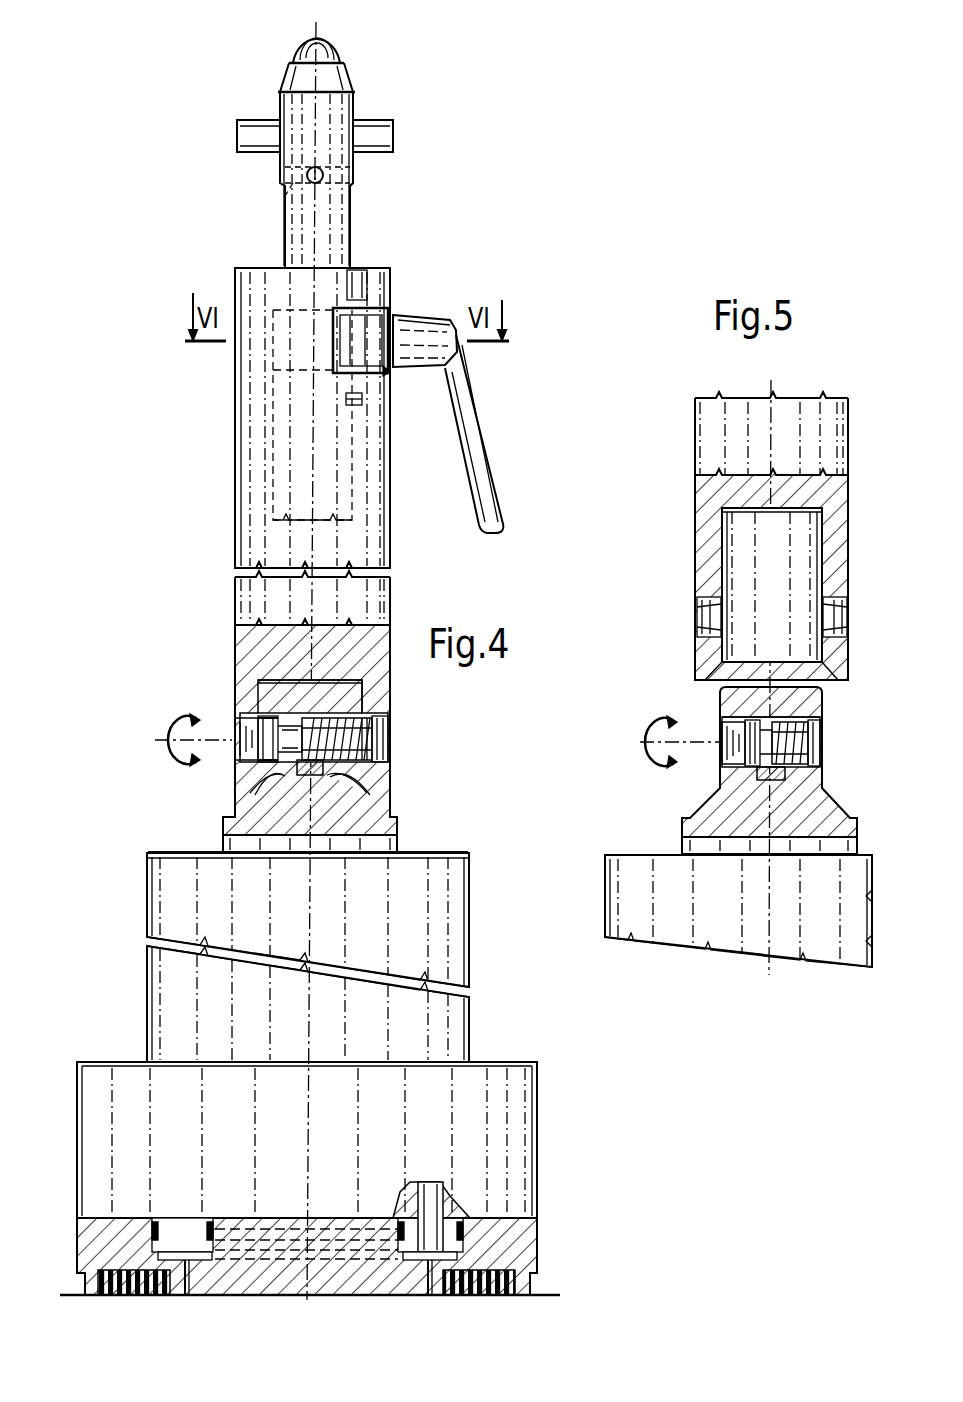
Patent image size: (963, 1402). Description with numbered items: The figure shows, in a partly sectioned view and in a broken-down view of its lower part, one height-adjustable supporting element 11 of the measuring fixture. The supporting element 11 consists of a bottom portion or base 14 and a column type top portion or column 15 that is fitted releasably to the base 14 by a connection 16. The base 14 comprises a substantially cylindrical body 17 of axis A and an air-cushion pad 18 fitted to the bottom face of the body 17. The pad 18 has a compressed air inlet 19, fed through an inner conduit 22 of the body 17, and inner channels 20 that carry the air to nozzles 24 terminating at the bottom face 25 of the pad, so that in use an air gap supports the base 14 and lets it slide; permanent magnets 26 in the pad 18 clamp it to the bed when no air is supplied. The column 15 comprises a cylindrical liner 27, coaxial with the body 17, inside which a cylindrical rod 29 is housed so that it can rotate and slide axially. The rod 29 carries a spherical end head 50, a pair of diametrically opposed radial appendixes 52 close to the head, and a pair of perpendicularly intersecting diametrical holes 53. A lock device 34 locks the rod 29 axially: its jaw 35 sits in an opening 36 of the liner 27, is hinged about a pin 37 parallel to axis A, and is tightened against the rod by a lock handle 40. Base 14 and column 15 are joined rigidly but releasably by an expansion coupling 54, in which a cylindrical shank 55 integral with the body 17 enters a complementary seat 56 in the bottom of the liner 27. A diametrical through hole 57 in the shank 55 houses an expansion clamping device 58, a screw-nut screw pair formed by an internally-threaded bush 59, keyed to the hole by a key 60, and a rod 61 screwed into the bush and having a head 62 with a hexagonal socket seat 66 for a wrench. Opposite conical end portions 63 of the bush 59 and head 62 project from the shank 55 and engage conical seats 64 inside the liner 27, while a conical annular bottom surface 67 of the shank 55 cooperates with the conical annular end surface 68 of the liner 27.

In FIG. 4, the supporting element 11 is at (421, 240).
In FIG. 4, the bottom portion (base) 14 is at (147, 993).
In FIG. 5, the bottom portion (base) 14 is at (828, 899).
In FIG. 4, the column type top portion (column) 15 is at (236, 550).
In FIG. 4, the connection 16 is at (222, 680).
In FIG. 4, the cylindrical body 17 is at (488, 1157).
In FIG. 4, the air-cushion pad 18 is at (515, 1253).
In FIG. 4, the compressed air inlet 19 is at (435, 1238).
In FIG. 4, the inner channels 20 is at (283, 1270).
In FIG. 4, the inner conduit 22 is at (433, 1205).
In FIG. 4, the nozzles 24 is at (190, 1282).
In FIG. 4, the bottom face 25 is at (328, 1294).
In FIG. 4, the permanent magnets 26 is at (152, 1290).
In FIG. 4, the cylindrical liner 27 is at (382, 512).
In FIG. 5, the cylindrical liner 27 is at (823, 452).
In FIG. 4, the cylindrical rod 29 is at (292, 243).
In FIG. 4, the lock device 34 is at (430, 318).
In FIG. 4, the jaw 35 is at (386, 372).
In FIG. 4, the opening 36 is at (392, 325).
In FIG. 4, the pin 37 is at (358, 280).
In FIG. 4, the lock handle 40 is at (472, 470).
In FIG. 4, the spherical end head 50 is at (338, 54).
In FIG. 4, the radial appendixes 52 is at (252, 128).
In FIG. 4, the diametrical holes 53 is at (292, 184).
In FIG. 4, the expansion coupling 54 is at (365, 773).
In FIG. 4, the cylindrical shank 55 is at (332, 695).
In FIG. 5, the cylindrical shank 55 is at (728, 702).
In FIG. 4, the seat 56 is at (272, 788).
In FIG. 5, the seat 56 is at (808, 548).
In FIG. 4, the diametrical through hole 57 is at (312, 731).
In FIG. 4, the expansion clamping device 58 is at (383, 793).
In FIG. 5, the expansion clamping device 58 is at (820, 746).
In FIG. 4, the internally-threaded bush 59 is at (375, 755).
In FIG. 5, the internally-threaded bush 59 is at (792, 721).
In FIG. 4, the key 60 is at (305, 775).
In FIG. 5, the key 60 is at (790, 773).
In FIG. 4, the rod 61 is at (252, 724).
In FIG. 4, the head 62 is at (265, 755).
In FIG. 5, the head 62 is at (738, 760).
In FIG. 4, the conical end portions 63 is at (255, 716).
In FIG. 5, the conical seats 64 is at (697, 612).
In FIG. 4, the hexagonal socket seat 66 is at (242, 738).
In FIG. 5, the conical annular bottom surface 67 is at (832, 793).
In FIG. 5, the conical annular end surface 68 is at (826, 676).
In FIG. 4, the axis A is at (312, 882).